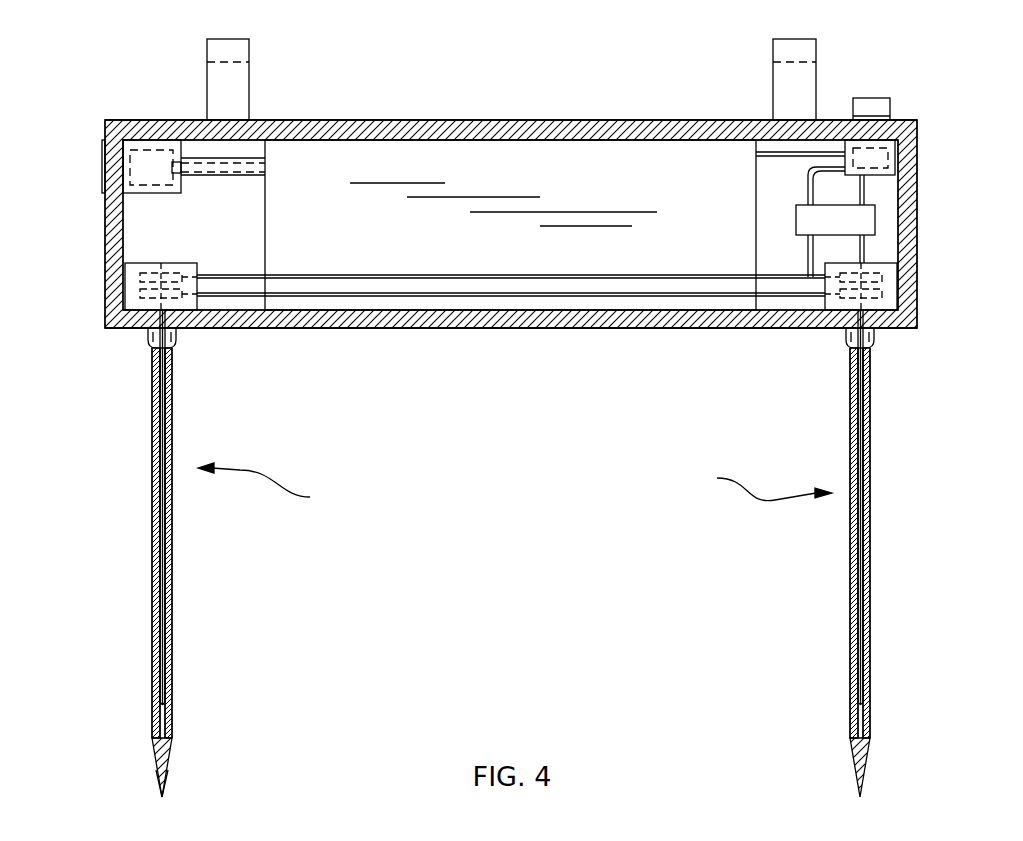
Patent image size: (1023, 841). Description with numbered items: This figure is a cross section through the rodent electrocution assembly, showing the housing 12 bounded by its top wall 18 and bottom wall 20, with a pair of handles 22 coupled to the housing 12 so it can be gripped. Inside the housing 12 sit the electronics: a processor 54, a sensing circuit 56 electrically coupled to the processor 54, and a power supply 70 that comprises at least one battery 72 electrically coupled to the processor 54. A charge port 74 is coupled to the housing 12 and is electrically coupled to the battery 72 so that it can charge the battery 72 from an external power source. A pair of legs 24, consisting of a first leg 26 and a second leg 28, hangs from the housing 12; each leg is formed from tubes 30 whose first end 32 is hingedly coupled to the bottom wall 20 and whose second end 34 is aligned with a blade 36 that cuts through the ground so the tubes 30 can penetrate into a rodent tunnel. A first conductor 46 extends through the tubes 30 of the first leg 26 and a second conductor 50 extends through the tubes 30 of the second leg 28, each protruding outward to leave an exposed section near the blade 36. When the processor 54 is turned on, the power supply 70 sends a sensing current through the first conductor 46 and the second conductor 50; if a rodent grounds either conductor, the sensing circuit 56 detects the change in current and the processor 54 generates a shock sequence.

The housing 12 is at (917, 120).
The top wall 18 is at (515, 120).
The bottom wall 20 is at (588, 328).
The handles 22 is at (225, 36).
The legs 24 is at (515, 488).
The first leg 26 is at (170, 607).
The second leg 28 is at (862, 592).
The tubes 30 is at (152, 522).
The first end 32 is at (152, 322).
The second end 34 is at (166, 748).
The blade 36 is at (155, 762).
The first conductor 46 is at (157, 690).
The second conductor 50 is at (865, 690).
The processor 54 is at (880, 216).
The sensing circuit 56 is at (125, 262).
The power supply 70 is at (757, 178).
The battery 72 is at (263, 188).
The charge port 74 is at (183, 148).